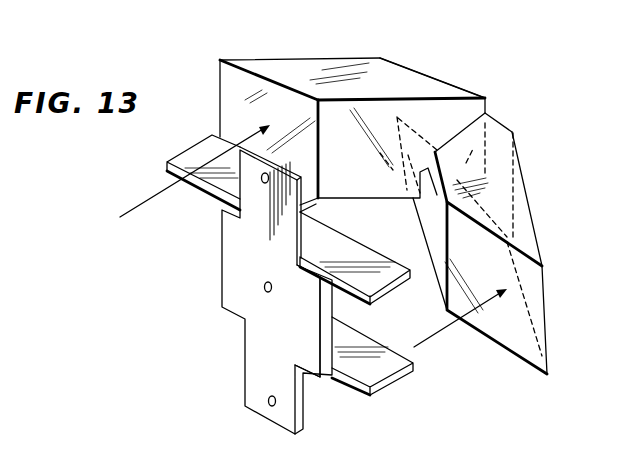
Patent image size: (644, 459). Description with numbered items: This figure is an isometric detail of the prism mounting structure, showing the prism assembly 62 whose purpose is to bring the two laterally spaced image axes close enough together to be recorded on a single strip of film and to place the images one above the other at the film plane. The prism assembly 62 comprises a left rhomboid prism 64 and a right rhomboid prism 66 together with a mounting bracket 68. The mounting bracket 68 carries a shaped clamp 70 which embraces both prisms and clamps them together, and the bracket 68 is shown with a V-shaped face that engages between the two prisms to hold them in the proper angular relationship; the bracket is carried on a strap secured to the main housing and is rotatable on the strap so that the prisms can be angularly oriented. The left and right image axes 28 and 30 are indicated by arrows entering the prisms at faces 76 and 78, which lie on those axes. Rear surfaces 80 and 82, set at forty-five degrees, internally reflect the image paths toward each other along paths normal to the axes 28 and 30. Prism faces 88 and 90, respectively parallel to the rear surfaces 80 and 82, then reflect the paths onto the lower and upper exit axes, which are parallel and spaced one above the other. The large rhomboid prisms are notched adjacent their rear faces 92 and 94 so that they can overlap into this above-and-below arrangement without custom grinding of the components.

The left image axis 28 is at (429, 340).
The right image axis 30 is at (137, 210).
The prism assembly 62 is at (540, 131).
The left rhomboid prism 64 is at (499, 231).
The right rhomboid prism 66 is at (440, 77).
The mounting bracket 68 is at (284, 284).
The shaped clamp 70 is at (332, 308).
The prism face 76 is at (522, 334).
The prism face 78 is at (227, 82).
The rear surface 80 is at (542, 254).
The rear surface 82 is at (298, 60).
The prism face 88 is at (432, 247).
The prism face 90 is at (338, 183).
The rear face 92 is at (509, 128).
The rear face 94 is at (474, 97).